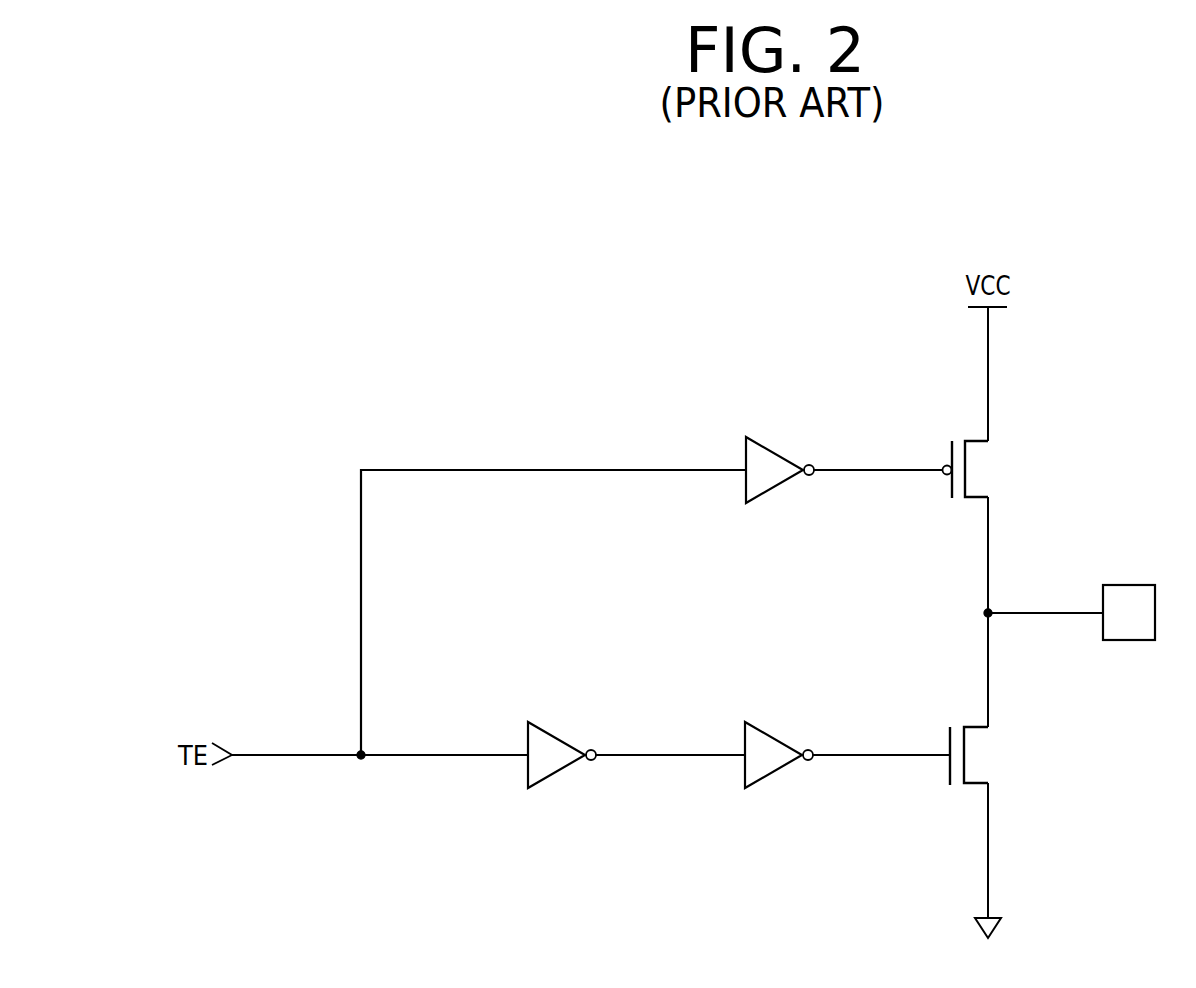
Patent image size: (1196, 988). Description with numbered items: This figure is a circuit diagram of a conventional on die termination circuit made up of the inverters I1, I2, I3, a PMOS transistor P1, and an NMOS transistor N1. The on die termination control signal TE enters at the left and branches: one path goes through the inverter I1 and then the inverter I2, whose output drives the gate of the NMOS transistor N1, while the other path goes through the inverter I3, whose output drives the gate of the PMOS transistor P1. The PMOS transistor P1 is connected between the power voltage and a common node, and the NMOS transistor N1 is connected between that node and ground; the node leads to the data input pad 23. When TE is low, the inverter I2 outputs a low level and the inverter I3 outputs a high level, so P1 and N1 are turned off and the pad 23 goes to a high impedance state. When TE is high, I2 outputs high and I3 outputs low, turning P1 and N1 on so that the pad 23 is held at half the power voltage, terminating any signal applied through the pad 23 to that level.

The data input pad 23 is at (1125, 585).
The inverter I1 is at (558, 733).
The inverter I2 is at (777, 731).
The inverter I3 is at (772, 450).
The PMOS transistor P1 is at (976, 527).
The NMOS transistor N1 is at (978, 765).